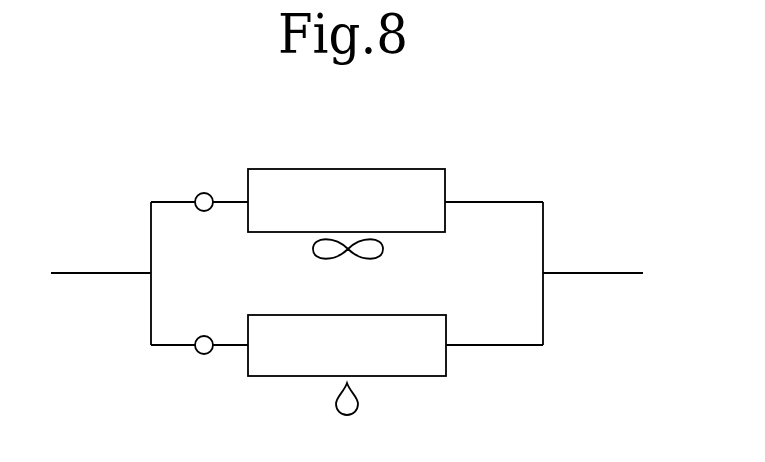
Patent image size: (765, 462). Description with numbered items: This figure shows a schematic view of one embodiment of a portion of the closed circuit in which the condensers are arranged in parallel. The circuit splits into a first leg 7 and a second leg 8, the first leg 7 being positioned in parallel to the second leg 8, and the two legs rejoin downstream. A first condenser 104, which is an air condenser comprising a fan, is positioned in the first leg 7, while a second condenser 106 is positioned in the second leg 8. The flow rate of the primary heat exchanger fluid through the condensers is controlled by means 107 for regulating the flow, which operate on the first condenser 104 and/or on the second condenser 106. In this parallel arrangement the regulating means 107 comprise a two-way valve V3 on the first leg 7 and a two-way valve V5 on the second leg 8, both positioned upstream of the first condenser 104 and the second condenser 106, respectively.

The first leg 7 is at (493, 195).
The second leg 8 is at (493, 355).
The first condenser 104 is at (377, 199).
The second condenser 106 is at (376, 352).
The means for regulating the flow 107 is at (175, 275).
The two-way valve V3 is at (189, 187).
The two-way valve V5 is at (189, 360).